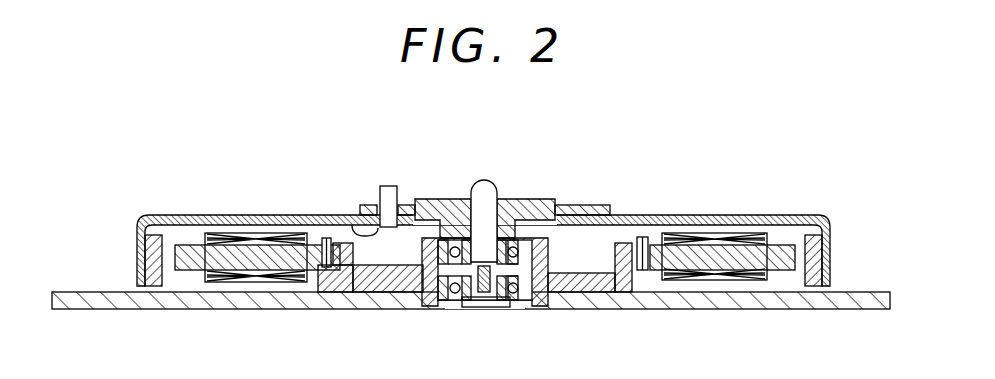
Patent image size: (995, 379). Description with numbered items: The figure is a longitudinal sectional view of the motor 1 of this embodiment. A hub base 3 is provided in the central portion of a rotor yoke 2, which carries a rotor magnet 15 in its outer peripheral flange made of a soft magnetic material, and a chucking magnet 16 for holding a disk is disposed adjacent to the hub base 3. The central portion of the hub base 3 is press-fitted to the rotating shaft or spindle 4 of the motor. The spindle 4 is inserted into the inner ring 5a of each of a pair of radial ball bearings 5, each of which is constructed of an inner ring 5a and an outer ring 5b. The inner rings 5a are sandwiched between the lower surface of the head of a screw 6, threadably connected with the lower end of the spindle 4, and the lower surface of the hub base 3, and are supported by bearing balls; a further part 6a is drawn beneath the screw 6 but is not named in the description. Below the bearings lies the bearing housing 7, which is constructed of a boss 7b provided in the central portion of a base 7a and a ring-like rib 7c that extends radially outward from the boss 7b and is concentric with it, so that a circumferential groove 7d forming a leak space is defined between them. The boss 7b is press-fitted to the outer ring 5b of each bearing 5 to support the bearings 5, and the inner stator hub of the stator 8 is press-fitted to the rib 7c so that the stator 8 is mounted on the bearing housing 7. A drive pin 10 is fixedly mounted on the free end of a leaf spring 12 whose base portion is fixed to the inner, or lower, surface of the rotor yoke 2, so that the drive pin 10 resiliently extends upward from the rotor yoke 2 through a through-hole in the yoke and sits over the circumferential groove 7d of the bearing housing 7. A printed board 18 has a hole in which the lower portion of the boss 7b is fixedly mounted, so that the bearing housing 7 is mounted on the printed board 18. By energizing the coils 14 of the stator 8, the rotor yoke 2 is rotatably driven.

The motor 1 is at (712, 195).
The rotor yoke 2 is at (270, 215).
The hub base 3 is at (527, 198).
The spindle 4 is at (487, 178).
The radial ball bearings 5 is at (522, 303).
The inner ring 5a is at (455, 233).
The outer ring 5b is at (441, 223).
The screw 6 is at (487, 303).
The screw seat plate 6a is at (468, 303).
The bearing housing 7 is at (620, 241).
The base 7a is at (598, 275).
The boss 7b is at (547, 262).
The ring-like rib 7c is at (353, 300).
The circumferential groove 7d is at (392, 300).
The stator 8 is at (218, 233).
The drive pin 10 is at (390, 187).
The leaf spring 12 is at (347, 213).
The coils 14 is at (713, 278).
The rotor magnet 15 is at (815, 255).
The chucking magnet 16 is at (602, 205).
The printed board 18 is at (752, 298).